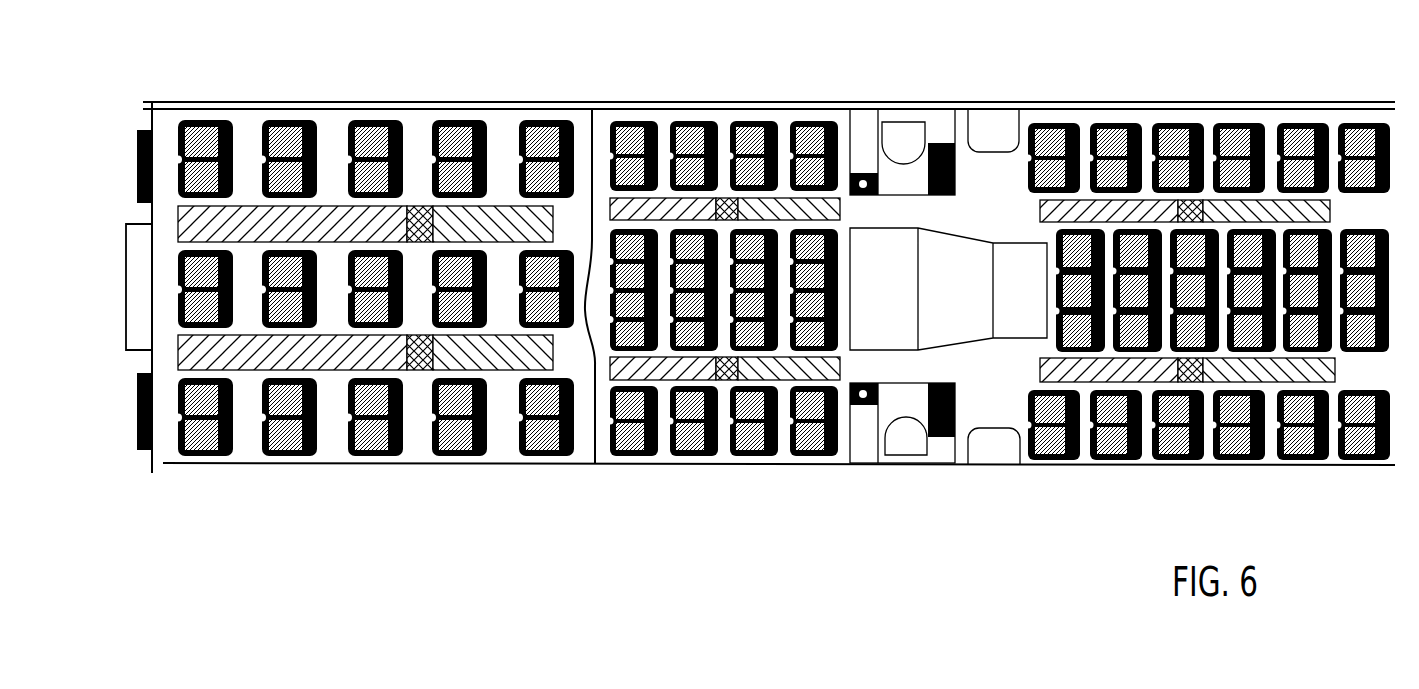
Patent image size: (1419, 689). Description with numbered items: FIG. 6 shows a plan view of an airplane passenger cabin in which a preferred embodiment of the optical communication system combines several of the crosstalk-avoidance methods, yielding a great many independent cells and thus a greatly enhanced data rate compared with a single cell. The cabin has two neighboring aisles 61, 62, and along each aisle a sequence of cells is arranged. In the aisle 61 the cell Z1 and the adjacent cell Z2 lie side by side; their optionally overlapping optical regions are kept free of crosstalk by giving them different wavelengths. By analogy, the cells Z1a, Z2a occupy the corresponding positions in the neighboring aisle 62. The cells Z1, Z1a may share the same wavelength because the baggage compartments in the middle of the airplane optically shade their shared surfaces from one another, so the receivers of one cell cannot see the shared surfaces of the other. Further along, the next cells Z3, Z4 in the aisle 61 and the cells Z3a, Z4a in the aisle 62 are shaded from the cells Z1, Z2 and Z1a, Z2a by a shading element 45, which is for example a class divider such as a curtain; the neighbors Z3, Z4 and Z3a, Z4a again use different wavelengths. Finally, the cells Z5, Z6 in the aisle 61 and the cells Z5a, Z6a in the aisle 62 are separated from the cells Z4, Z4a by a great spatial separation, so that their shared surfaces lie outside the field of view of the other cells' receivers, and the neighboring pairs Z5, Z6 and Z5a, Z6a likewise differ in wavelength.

The shading element 45 is at (603, 108).
The aisle 61 is at (1011, 222).
The aisle 62 is at (1008, 382).
The cell Z1 is at (336, 226).
The cell Z2 is at (492, 220).
The cell Z3 is at (661, 208).
The cell Z4 is at (783, 208).
The cell Z5 is at (1090, 208).
The cell Z6 is at (1265, 215).
The cell Z1a is at (257, 357).
The cell Z2a is at (503, 357).
The cell Z3a is at (670, 373).
The cell Z4a is at (790, 367).
The cell Z5a is at (1102, 367).
The cell Z6a is at (1267, 368).